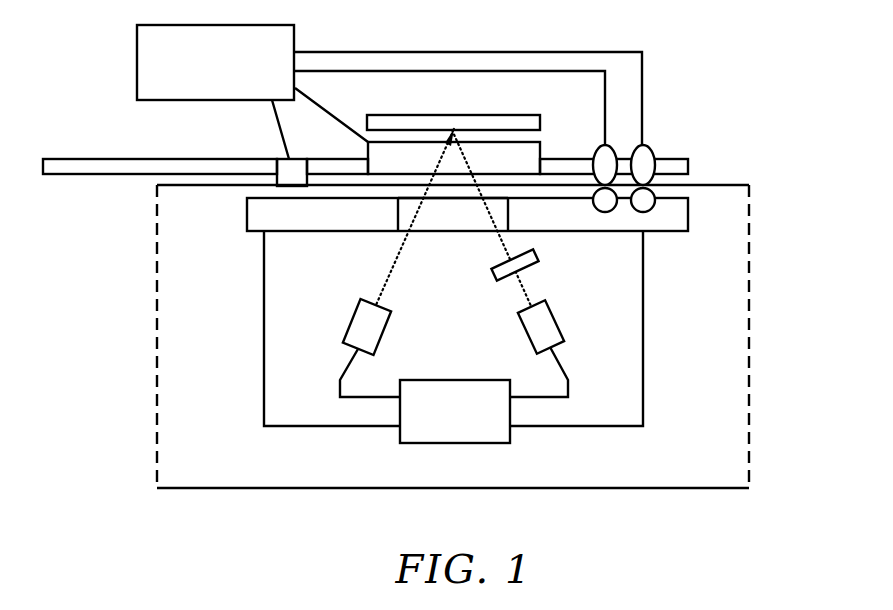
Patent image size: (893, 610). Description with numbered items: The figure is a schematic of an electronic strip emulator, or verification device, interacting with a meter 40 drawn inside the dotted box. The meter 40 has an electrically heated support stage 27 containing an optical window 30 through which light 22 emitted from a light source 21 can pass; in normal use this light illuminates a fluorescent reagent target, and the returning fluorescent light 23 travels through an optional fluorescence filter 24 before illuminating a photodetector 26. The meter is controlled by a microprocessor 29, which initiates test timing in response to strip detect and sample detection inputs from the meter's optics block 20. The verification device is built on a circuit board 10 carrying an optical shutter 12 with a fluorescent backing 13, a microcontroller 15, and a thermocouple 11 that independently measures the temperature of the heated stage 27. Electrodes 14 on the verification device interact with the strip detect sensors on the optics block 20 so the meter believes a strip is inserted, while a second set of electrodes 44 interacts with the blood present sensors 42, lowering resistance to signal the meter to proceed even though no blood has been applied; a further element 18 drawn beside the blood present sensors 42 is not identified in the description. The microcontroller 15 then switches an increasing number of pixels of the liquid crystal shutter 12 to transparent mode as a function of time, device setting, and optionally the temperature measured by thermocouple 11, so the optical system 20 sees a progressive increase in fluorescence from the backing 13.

The circuit board 10 is at (122, 159).
The thermocouple 11 is at (288, 158).
The optical shutter 12 is at (335, 159).
The fluorescent backing 13 is at (465, 115).
The electrodes 14 is at (650, 146).
The microcontroller 15 is at (202, 77).
The idler roller 18 is at (648, 211).
The optics block 20 is at (749, 287).
The light source 21 is at (360, 326).
The light 22 is at (388, 277).
The fluorescent light 23 is at (503, 244).
The fluorescence filter 24 is at (530, 267).
The photodetector 26 is at (535, 332).
The electrically heated support stage 27 is at (247, 226).
The microprocessor 29 is at (445, 425).
The optical window 30 is at (448, 231).
The meter 40 is at (202, 377).
The blood present sensors 42 is at (604, 212).
The second set of electrodes 44 is at (604, 146).